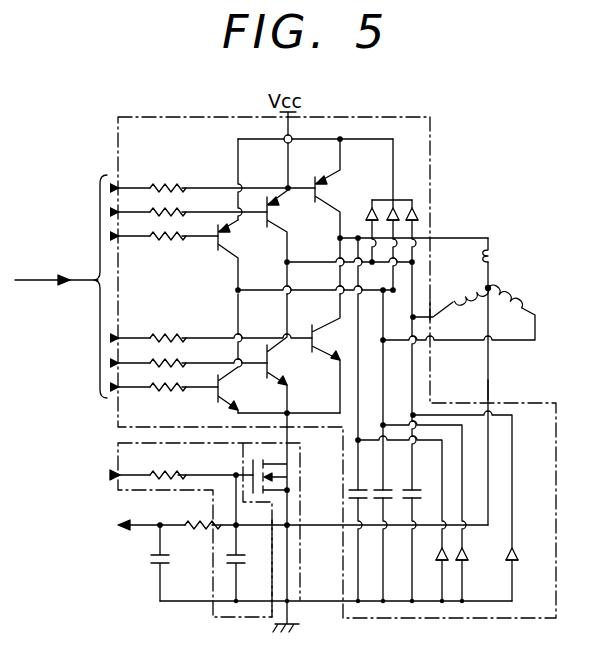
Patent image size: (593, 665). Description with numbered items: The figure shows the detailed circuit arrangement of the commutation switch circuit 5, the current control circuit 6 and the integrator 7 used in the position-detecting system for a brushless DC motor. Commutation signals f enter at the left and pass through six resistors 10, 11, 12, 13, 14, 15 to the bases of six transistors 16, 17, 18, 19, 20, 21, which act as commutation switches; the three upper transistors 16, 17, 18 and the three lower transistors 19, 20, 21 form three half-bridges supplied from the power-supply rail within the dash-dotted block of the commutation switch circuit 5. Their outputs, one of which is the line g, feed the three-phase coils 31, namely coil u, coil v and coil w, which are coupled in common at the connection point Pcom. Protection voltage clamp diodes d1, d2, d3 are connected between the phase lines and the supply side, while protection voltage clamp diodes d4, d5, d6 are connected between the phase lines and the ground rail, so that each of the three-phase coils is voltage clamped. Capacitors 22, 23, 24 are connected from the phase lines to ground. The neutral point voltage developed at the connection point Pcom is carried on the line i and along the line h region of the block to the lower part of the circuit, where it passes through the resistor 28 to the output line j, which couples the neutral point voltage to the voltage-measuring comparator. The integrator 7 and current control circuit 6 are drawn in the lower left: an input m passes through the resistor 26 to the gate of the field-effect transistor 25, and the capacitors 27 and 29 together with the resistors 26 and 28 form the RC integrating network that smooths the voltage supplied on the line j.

The commutation switch circuit 5 is at (405, 118).
The current control circuit 6 is at (264, 620).
The integrator 7 is at (213, 620).
The resistor 10 is at (165, 185).
The resistor 11 is at (183, 208).
The resistor 12 is at (167, 243).
The resistor 13 is at (168, 333).
The resistor 14 is at (175, 362).
The resistor 15 is at (168, 392).
The transistor 16 is at (331, 193).
The transistor 17 is at (276, 212).
The transistor 18 is at (229, 247).
The transistor 19 is at (322, 336).
The transistor 20 is at (280, 367).
The transistor 21 is at (231, 386).
The capacitor 22 is at (419, 489).
The capacitor 23 is at (389, 489).
The capacitor 24 is at (348, 493).
The field-effect transistor 25 is at (284, 480).
The resistor 26 is at (176, 475).
The capacitor 27 is at (239, 563).
The resistor 28 is at (197, 522).
The capacitor 29 is at (168, 558).
The three-phase coils 31 is at (470, 374).
The protection voltage clamp diode d1 is at (422, 213).
The protection voltage clamp diode d2 is at (395, 207).
The protection voltage clamp diode d3 is at (369, 212).
The protection voltage clamp diode d4 is at (513, 562).
The protection voltage clamp diode d5 is at (465, 562).
The protection voltage clamp diode d6 is at (438, 562).
The coil U u is at (505, 286).
The coil V v is at (491, 258).
The coil W w is at (458, 298).
The line g is at (458, 237).
The line h is at (431, 310).
The line i is at (452, 343).
The line j is at (138, 532).
The input m is at (108, 470).
The input f is at (42, 278).
The connection point Pcom is at (463, 331).